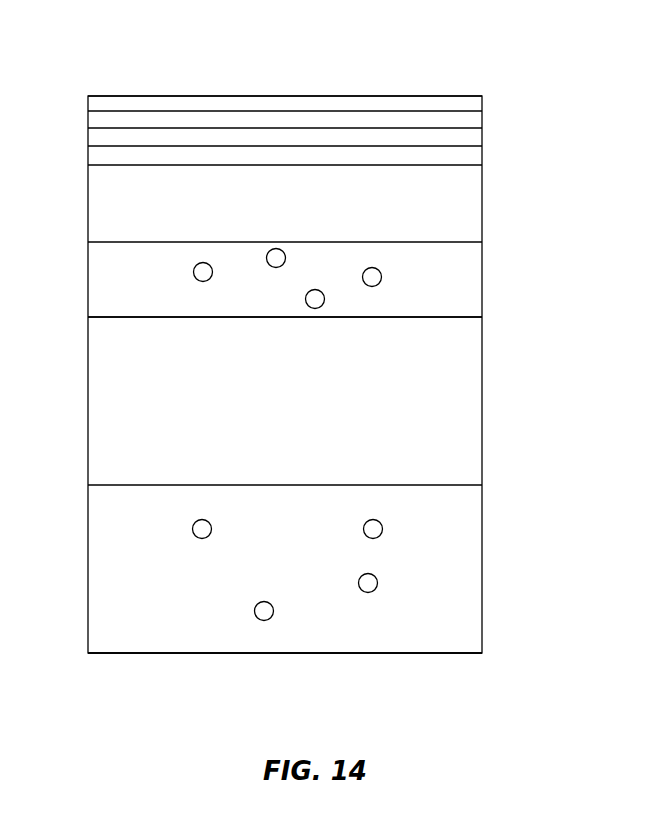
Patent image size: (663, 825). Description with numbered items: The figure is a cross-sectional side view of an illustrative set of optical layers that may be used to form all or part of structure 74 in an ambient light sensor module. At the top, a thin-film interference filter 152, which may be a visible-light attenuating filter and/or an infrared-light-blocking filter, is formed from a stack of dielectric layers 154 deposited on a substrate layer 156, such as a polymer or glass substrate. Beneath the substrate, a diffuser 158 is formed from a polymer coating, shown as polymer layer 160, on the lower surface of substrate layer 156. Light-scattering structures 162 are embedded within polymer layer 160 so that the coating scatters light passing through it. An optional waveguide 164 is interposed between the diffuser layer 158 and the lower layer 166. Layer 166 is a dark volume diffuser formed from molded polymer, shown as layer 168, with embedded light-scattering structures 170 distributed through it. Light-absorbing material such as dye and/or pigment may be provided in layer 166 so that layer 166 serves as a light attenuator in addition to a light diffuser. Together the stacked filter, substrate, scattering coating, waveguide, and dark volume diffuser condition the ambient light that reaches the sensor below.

The structure 74 is at (456, 67).
The thin-film interference filter 152 is at (72, 96).
The dielectric layers 154 is at (472, 100).
The substrate layer 156 is at (472, 203).
The diffuser 158 is at (72, 243).
The polymer layer 160 is at (472, 306).
The light-scattering structures 162 is at (382, 277).
The waveguide 164 is at (472, 405).
The layer 166 is at (75, 485).
The molded polymer layer 168 is at (472, 578).
The particles 170 is at (367, 593).